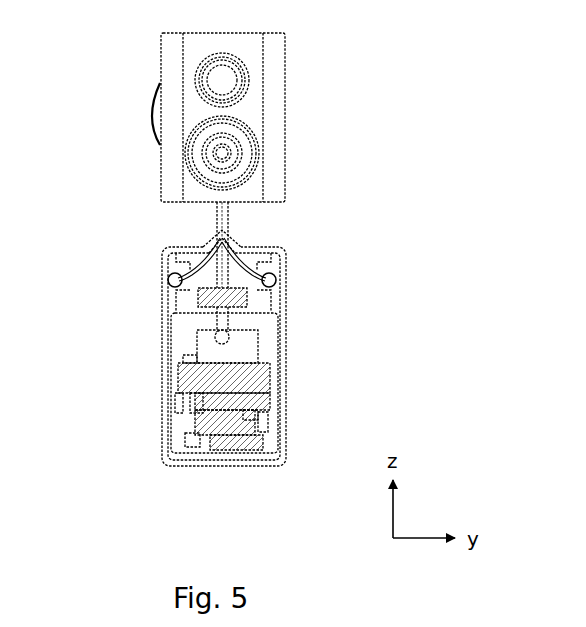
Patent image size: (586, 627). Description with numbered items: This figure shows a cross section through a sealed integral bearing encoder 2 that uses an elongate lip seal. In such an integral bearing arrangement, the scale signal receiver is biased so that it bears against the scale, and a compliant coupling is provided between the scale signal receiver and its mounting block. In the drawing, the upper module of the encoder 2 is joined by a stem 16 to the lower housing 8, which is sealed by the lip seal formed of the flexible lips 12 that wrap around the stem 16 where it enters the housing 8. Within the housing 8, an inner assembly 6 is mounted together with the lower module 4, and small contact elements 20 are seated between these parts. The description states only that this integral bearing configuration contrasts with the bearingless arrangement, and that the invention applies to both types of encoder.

The sensor device 2 is at (397, 126).
The electronics module 4 is at (253, 405).
The battery / energy store 6 is at (168, 378).
The housing 8 is at (163, 438).
The spring clip 12 is at (213, 245).
The connecting stem 16 is at (217, 225).
The contact element 20 is at (193, 407).